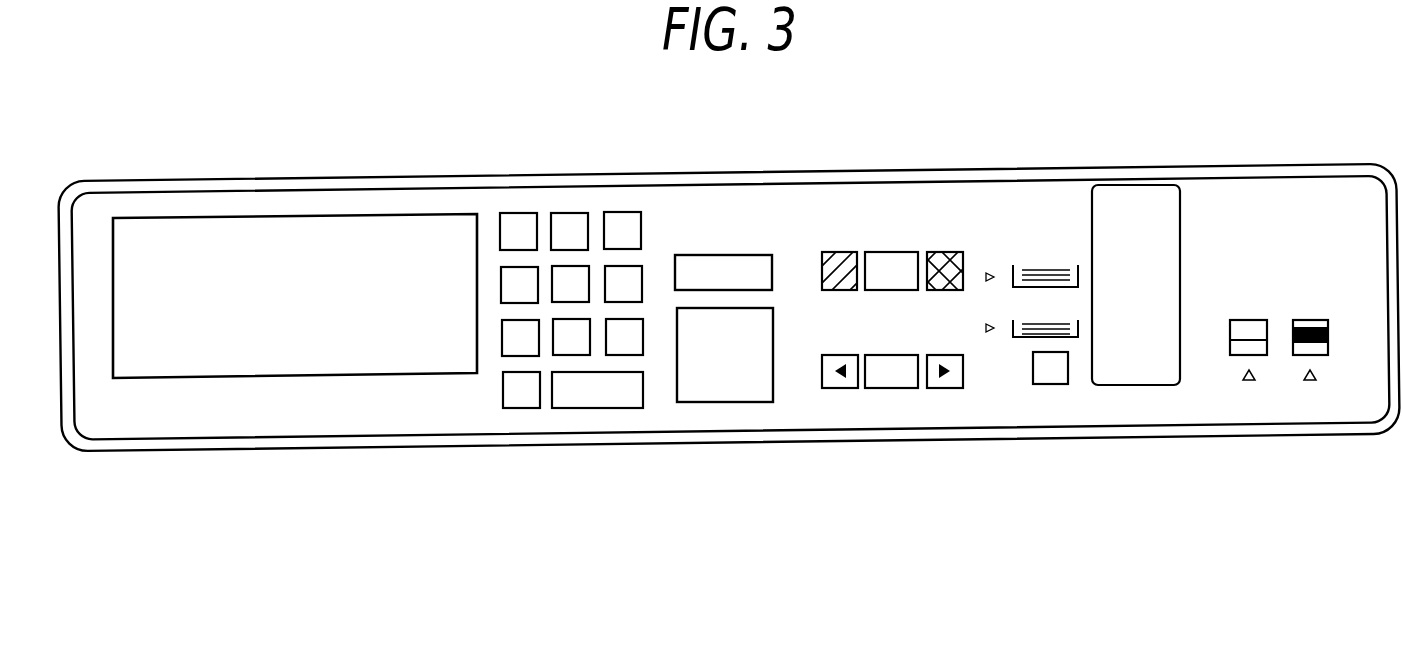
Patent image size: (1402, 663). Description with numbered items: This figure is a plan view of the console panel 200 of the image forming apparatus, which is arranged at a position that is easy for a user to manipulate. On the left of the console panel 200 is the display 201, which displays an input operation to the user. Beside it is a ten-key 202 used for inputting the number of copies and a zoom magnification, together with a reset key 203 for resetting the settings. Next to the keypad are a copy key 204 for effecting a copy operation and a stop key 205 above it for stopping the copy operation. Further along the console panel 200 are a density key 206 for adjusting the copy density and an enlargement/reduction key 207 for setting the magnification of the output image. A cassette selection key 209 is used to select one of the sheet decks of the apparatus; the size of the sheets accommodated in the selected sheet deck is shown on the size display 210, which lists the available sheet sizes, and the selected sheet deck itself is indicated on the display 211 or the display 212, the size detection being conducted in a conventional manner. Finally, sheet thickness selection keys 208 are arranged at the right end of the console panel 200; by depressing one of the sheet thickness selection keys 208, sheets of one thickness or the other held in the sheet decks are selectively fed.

The console panel 200 is at (247, 451).
The display 201 is at (283, 217).
The ten-key 202 is at (640, 166).
The reset key 203 is at (598, 409).
The copy key 204 is at (729, 403).
The stop key 205 is at (725, 255).
The density key 206 is at (957, 161).
The enlargement/reduction key 207 is at (962, 445).
The sheet thickness selection keys 208 is at (1360, 268).
The cassette selection key 209 is at (1068, 370).
The size display 210 is at (1128, 185).
The display 211 is at (993, 270).
The display 212 is at (991, 334).